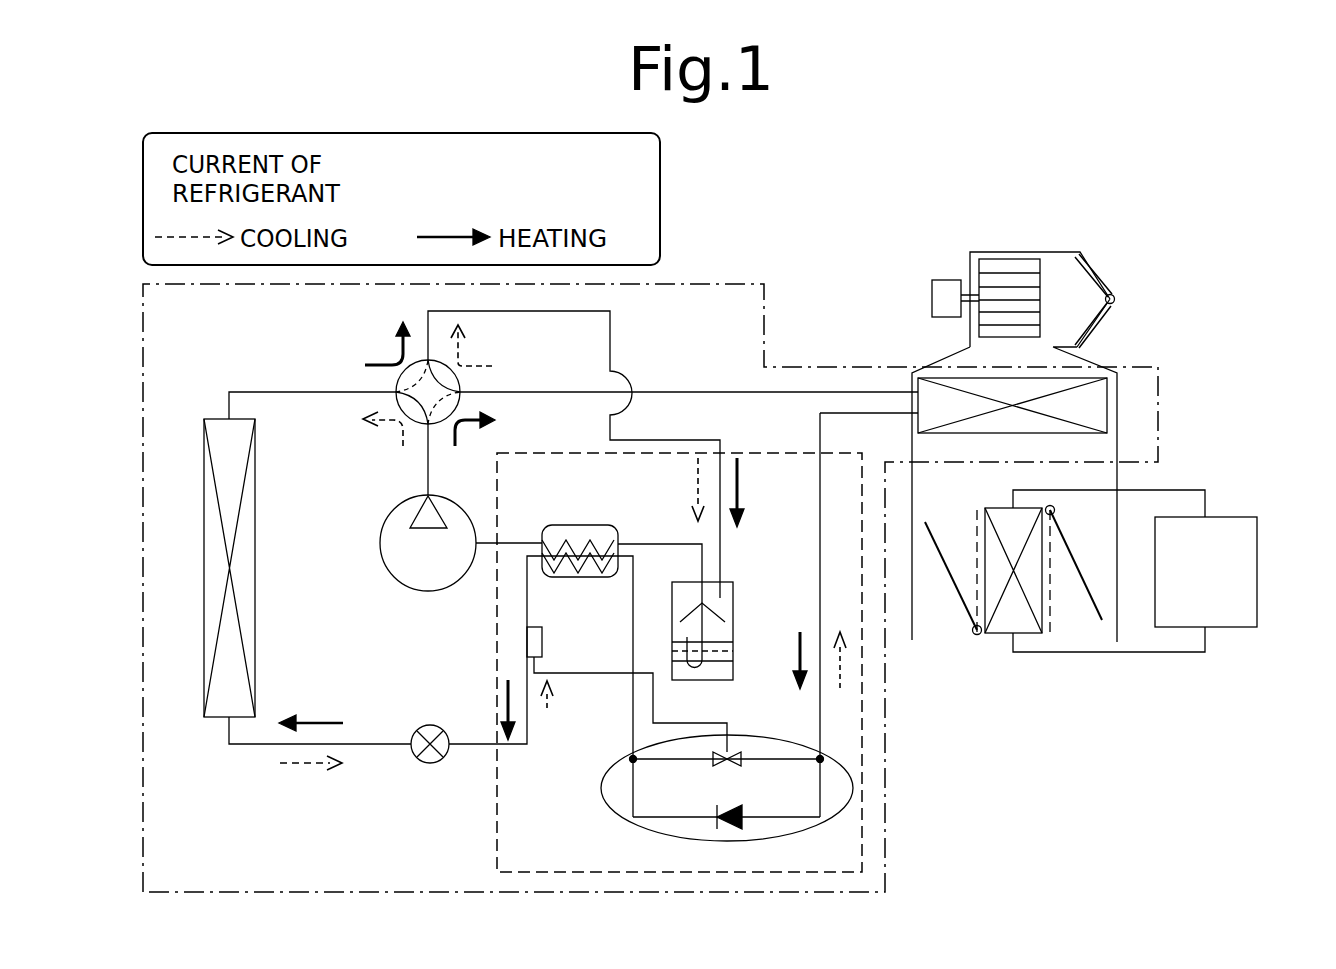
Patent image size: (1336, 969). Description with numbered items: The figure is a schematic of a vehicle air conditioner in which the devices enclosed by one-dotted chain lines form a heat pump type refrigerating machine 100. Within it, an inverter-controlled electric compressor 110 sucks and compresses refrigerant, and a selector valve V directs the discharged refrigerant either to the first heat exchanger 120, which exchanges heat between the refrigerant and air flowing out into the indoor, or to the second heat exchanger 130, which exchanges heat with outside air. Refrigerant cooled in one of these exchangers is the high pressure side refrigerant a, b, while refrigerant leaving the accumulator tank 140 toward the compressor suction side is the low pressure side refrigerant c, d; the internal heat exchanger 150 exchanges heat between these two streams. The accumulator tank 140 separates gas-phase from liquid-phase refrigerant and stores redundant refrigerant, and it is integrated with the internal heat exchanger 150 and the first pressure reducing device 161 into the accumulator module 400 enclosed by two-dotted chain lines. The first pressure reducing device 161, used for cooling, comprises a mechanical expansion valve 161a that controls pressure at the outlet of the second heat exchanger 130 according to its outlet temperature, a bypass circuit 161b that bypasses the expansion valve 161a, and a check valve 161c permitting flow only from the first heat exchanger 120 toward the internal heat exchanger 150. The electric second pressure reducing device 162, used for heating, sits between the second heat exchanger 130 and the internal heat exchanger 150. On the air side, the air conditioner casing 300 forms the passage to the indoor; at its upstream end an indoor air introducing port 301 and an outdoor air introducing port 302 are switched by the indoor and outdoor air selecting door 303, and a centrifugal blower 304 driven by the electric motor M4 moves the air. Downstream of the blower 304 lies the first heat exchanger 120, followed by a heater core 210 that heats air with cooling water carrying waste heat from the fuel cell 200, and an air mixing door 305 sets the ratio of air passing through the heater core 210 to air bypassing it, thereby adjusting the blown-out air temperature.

The heat pump type refrigerating machine 100 is at (122, 355).
The electric compressor 110 is at (428, 592).
The first heat exchanger 120 is at (1085, 375).
The second heat exchanger 130 is at (210, 416).
The accumulator tank 140 is at (735, 608).
The internal heat exchanger 150 is at (583, 525).
The first pressure reducing device 161 is at (758, 779).
The expansion valve 161a is at (733, 756).
The bypass circuit 161b is at (672, 818).
The check valve 161c is at (742, 822).
The second pressure reducing device 162 is at (425, 764).
The fuel cell 200 is at (1258, 541).
The heater core 210 is at (1000, 636).
The air conditioner casing 300 is at (1117, 512).
The indoor air introducing port 301 is at (1095, 334).
The outdoor air introducing port 302 is at (1092, 273).
The indoor and outdoor air selecting door 303 is at (1179, 298).
The centrifugal blower 304 is at (997, 280).
The air mixing door 305 is at (949, 580).
The accumulator module 400 is at (484, 855).
The selector valve V is at (396, 383).
The electric motor M4 is at (944, 290).
The high pressure side refrigerant a is at (470, 748).
The high pressure side refrigerant b is at (820, 433).
The low pressure side refrigerant c is at (657, 440).
The low pressure side refrigerant d is at (480, 543).